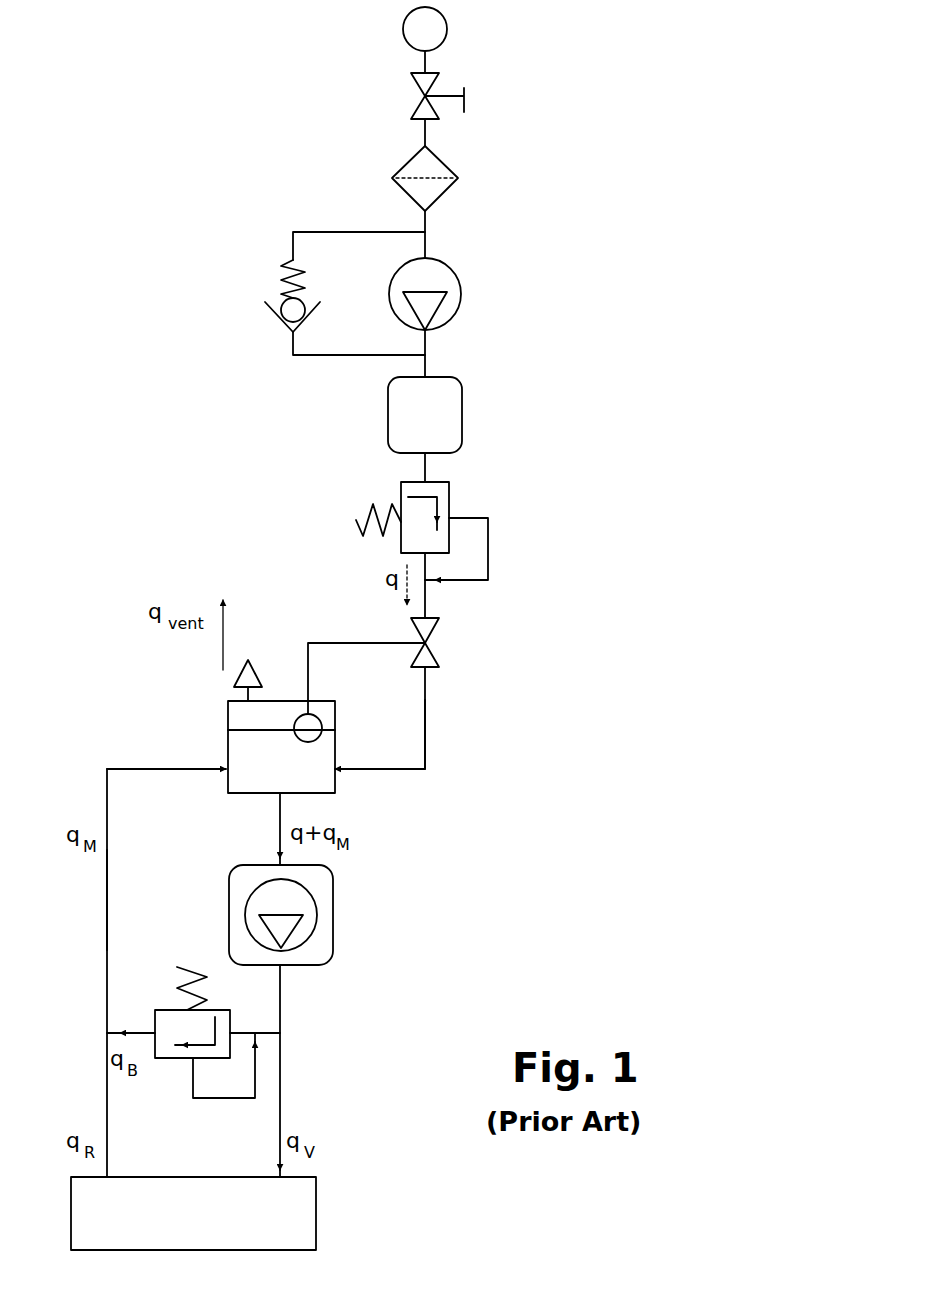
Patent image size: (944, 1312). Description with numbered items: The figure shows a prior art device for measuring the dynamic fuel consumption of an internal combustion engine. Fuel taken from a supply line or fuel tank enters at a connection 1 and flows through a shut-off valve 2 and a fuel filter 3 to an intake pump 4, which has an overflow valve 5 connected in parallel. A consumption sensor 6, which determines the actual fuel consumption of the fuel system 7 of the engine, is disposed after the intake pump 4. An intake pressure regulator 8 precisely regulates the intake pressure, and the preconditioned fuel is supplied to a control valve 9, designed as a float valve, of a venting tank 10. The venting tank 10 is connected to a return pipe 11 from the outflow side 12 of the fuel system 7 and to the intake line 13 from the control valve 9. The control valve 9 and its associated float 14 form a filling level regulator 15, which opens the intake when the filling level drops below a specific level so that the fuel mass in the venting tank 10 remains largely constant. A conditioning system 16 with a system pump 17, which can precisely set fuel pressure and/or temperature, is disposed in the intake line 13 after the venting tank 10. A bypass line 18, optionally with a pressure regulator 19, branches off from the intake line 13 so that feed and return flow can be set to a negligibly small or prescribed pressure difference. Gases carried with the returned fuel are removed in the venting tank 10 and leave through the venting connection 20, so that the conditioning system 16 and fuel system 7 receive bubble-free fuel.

The connection 1 is at (447, 28).
The shut-off valve 2 is at (438, 85).
The fuel filter 3 is at (440, 162).
The intake pump 4 is at (455, 277).
The overflow valve 5 is at (283, 318).
The consumption sensor 6 is at (465, 415).
The fuel system 7 is at (318, 1213).
The intake pressure regulator 8 is at (452, 497).
The control valve 9 is at (432, 633).
The venting tank 10 is at (235, 800).
The return pipe 11 is at (107, 905).
The outflow side 12 is at (110, 1175).
The intake line 13 is at (426, 718).
The float 14 is at (295, 722).
The filling level regulator 15 is at (303, 625).
The conditioning system 16 is at (336, 897).
The system pump 17 is at (313, 933).
The bypass line 18 is at (150, 1025).
The pressure regulator 19 is at (177, 1060).
The venting connection 20 is at (240, 700).